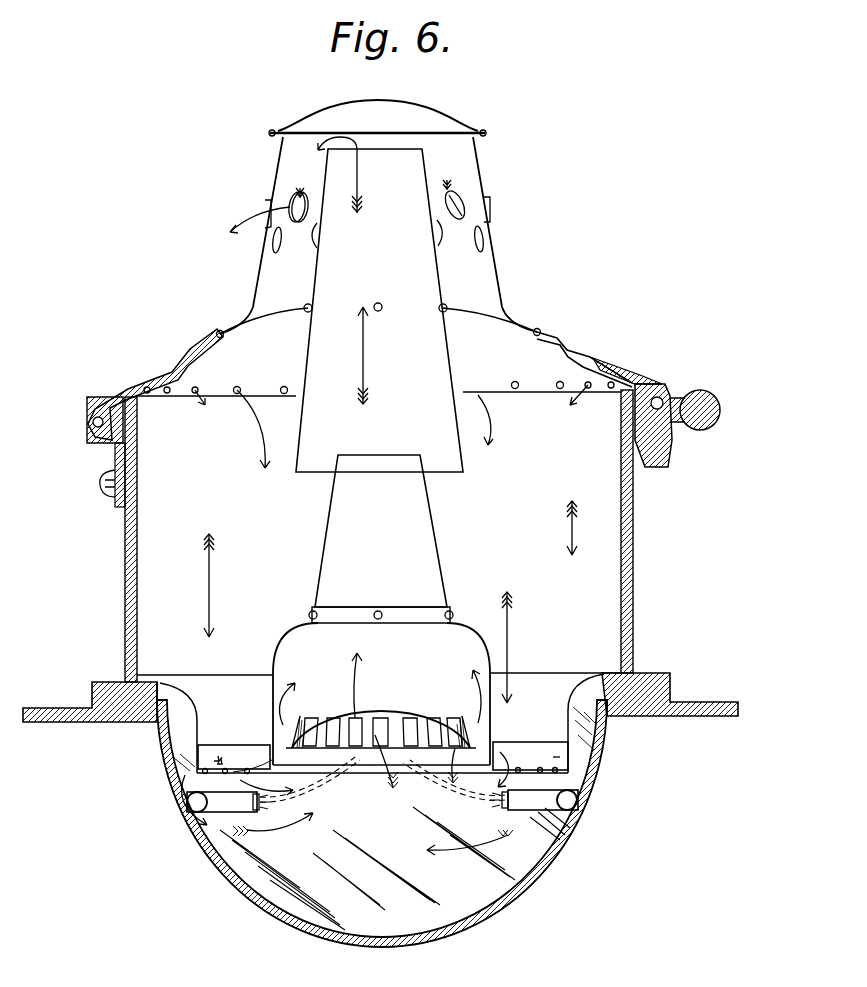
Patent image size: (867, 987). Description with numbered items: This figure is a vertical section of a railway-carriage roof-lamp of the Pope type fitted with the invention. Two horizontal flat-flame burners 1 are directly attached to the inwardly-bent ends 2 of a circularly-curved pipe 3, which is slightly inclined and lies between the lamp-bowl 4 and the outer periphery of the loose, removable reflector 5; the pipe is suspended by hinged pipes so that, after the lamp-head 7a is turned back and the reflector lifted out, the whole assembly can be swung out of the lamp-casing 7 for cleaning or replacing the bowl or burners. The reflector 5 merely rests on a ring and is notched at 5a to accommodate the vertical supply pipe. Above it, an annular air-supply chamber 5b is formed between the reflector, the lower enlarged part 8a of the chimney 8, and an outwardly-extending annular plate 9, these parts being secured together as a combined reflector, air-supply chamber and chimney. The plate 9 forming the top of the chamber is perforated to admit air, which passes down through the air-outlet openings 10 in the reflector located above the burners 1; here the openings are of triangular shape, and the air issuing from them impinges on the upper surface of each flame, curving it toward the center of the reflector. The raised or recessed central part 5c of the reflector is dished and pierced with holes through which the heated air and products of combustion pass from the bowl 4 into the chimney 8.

The flat-flame burners 1 is at (499, 816).
The inwardly-bent ends of the pipe 2 is at (382, 801).
The circularly-curved pipe 3 is at (578, 802).
The lamp-bowl 4 is at (382, 814).
The reflector 5 is at (530, 745).
The notch in reflector 5a is at (350, 715).
The annular air-supply chamber 5b is at (560, 757).
The raised or recessed central part of reflector 5c is at (407, 707).
The lamp-casing 7 is at (380, 525).
The lamp-head 7a is at (379, 219).
The chimney 8 is at (379, 386).
The lower enlarged part of chimney 8a is at (381, 694).
The outwardly-extending annular plate 9 is at (238, 745).
The air-outlet openings 10 is at (233, 772).